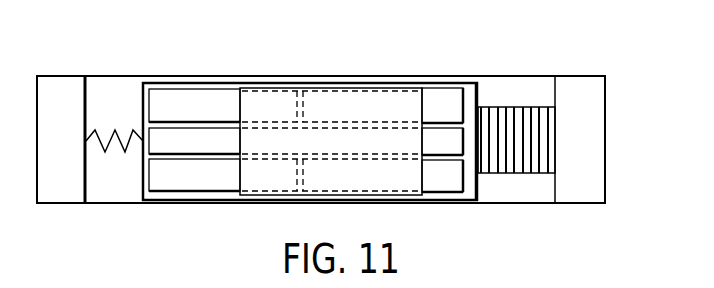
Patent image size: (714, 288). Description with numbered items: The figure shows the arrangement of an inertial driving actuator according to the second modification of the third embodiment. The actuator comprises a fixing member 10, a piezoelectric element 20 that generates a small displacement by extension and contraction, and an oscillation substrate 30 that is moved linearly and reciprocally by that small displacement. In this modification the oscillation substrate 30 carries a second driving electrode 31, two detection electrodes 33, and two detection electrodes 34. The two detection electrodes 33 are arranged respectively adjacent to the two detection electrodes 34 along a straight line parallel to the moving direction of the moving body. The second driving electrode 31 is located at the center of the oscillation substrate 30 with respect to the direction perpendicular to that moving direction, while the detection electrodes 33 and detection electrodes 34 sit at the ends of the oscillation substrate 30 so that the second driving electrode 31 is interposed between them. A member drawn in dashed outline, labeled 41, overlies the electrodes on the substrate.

The fixing member 10 is at (60, 89).
The piezoelectric element 20 is at (530, 140).
The oscillation substrate 30 is at (468, 85).
The second driving electrode 31 is at (177, 135).
The detection electrodes 33 is at (447, 172).
The detection electrodes 34 is at (212, 108).
The cover 41 is at (240, 101).